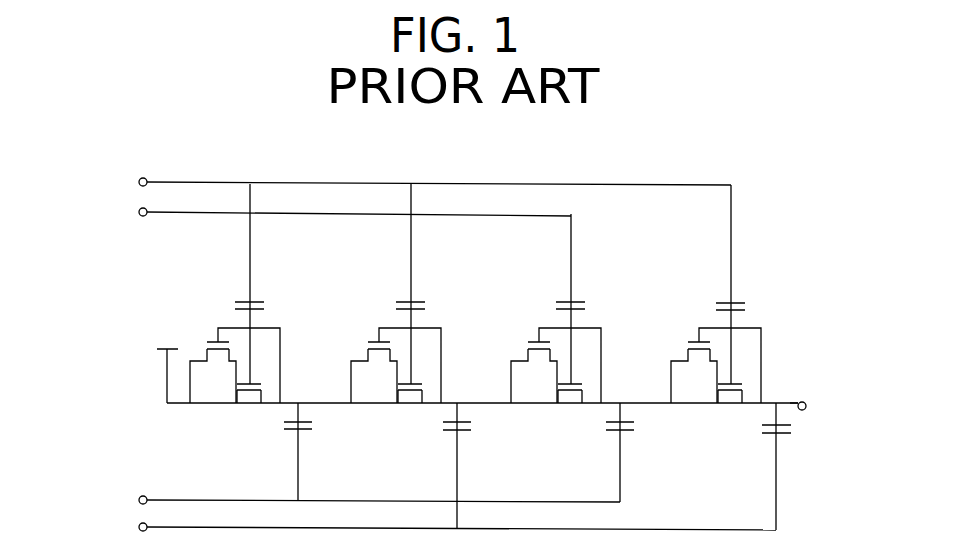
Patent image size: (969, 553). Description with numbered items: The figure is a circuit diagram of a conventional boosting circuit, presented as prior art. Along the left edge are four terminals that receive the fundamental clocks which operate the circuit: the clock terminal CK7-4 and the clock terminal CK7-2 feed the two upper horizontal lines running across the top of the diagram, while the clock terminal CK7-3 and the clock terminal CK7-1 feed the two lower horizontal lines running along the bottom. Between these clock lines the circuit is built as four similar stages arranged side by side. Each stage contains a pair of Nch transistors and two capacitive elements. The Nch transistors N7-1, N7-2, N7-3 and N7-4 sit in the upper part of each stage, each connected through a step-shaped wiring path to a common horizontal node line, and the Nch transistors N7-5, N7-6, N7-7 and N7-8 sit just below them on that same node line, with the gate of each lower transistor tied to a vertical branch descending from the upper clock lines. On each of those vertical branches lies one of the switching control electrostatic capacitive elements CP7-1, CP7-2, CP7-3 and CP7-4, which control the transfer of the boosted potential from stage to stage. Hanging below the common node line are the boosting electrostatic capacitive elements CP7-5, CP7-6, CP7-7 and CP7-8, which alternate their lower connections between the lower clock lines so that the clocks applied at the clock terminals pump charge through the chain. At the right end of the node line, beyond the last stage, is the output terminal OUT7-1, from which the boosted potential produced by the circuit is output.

The clock terminal CK7-4 is at (139, 179).
The clock terminal CK7-2 is at (139, 215).
The clock terminal CK7-3 is at (139, 497).
The clock terminal CK7-1 is at (139, 529).
The switching control electrostatic capacitive element CP7-1 is at (254, 299).
The switching control electrostatic capacitive element CP7-2 is at (416, 299).
The switching control electrostatic capacitive element CP7-3 is at (577, 299).
The switching control electrostatic capacitive element CP7-4 is at (738, 300).
The boosting electrostatic capacitive element CP7-5 is at (313, 425).
The boosting electrostatic capacitive element CP7-6 is at (473, 427).
The boosting electrostatic capacitive element CP7-7 is at (633, 430).
The boosting electrostatic capacitive element CP7-8 is at (752, 430).
The Nch transistor N7-1 is at (207, 336).
The Nch transistor N7-2 is at (367, 336).
The Nch transistor N7-3 is at (529, 336).
The Nch transistor N7-4 is at (689, 337).
The Nch transistor N7-5 is at (251, 381).
The Nch transistor N7-6 is at (413, 381).
The Nch transistor N7-7 is at (575, 381).
The Nch transistor N7-8 is at (735, 381).
The output terminal OUT7-1 is at (803, 411).